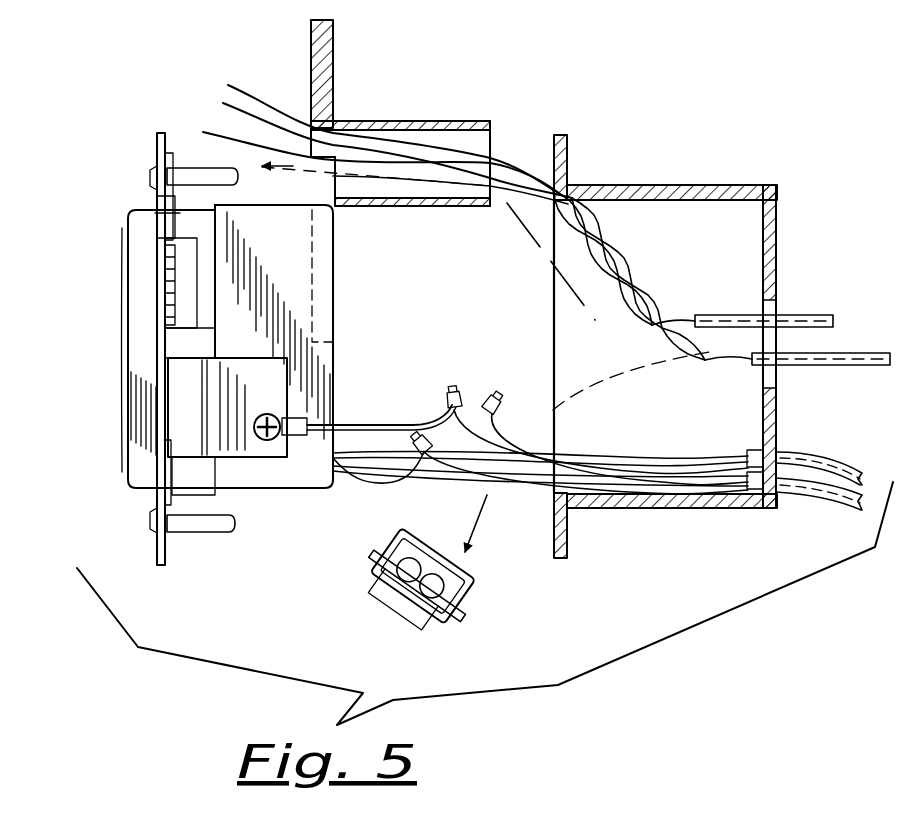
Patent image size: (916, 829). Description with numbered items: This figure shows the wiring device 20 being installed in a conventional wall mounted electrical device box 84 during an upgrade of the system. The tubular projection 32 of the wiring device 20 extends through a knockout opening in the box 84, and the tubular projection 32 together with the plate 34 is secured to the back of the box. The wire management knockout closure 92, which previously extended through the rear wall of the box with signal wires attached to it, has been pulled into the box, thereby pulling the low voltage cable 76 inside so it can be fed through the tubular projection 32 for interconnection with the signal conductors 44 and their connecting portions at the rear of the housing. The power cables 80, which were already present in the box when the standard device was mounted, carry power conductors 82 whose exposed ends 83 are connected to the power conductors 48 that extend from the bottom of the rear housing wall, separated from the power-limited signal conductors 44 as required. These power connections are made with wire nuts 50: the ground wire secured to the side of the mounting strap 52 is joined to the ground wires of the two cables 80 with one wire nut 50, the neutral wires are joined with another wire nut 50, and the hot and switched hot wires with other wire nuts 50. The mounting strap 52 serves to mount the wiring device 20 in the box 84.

The wiring device 20 is at (118, 312).
The tubular projection 32 is at (441, 114).
The plate 34 is at (328, 58).
The signal conductors 44 is at (268, 107).
The power conductors 48 is at (383, 485).
The wire nut 50 is at (455, 386).
The mounting strap 52 is at (168, 565).
The low voltage cable 76 is at (799, 308).
The power cables 80 is at (813, 446).
The power conductors 82 is at (614, 450).
The exposed ends 83 is at (466, 393).
The electrical device box 84 is at (656, 182).
The wire management knockout closure 92 is at (353, 590).